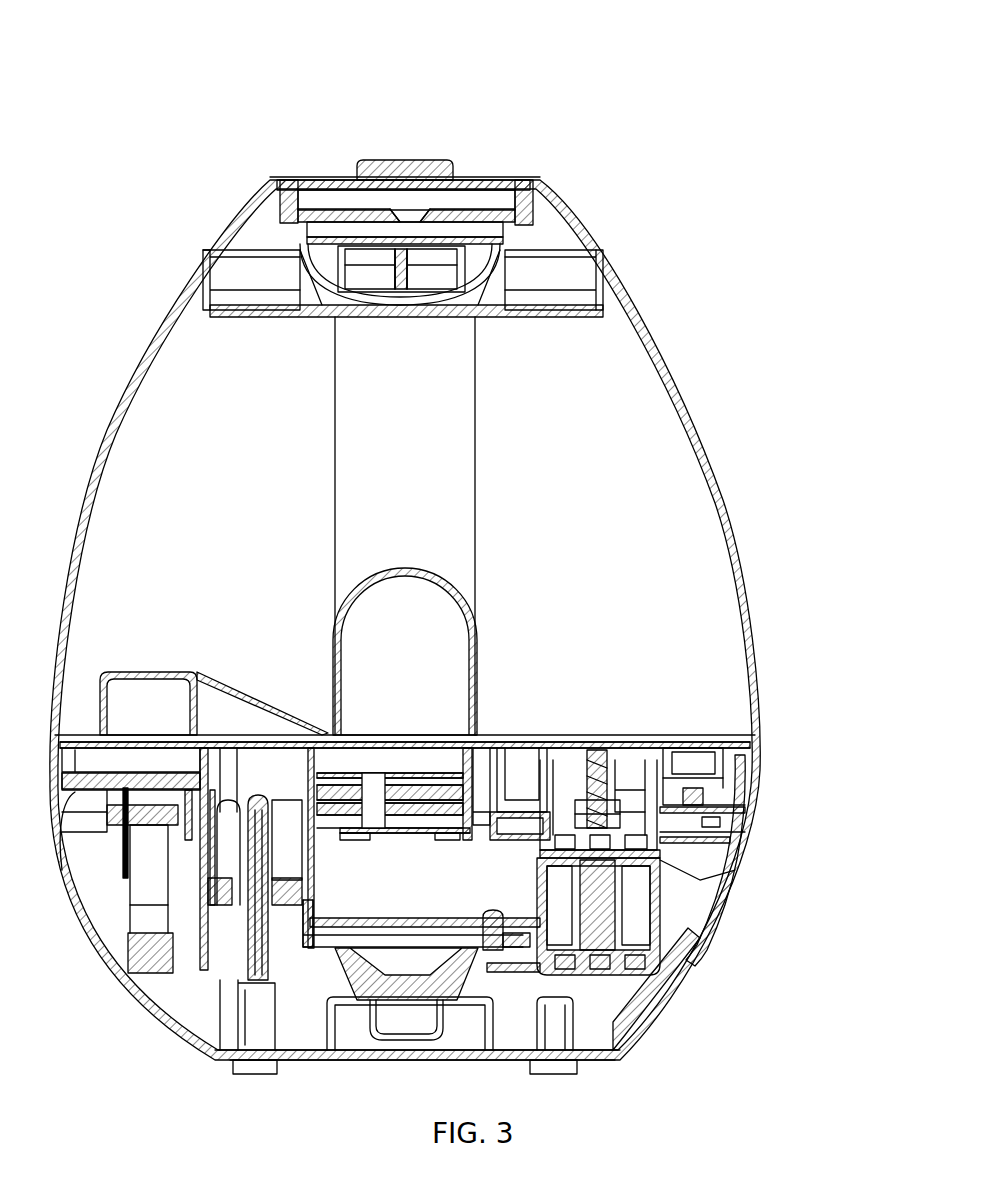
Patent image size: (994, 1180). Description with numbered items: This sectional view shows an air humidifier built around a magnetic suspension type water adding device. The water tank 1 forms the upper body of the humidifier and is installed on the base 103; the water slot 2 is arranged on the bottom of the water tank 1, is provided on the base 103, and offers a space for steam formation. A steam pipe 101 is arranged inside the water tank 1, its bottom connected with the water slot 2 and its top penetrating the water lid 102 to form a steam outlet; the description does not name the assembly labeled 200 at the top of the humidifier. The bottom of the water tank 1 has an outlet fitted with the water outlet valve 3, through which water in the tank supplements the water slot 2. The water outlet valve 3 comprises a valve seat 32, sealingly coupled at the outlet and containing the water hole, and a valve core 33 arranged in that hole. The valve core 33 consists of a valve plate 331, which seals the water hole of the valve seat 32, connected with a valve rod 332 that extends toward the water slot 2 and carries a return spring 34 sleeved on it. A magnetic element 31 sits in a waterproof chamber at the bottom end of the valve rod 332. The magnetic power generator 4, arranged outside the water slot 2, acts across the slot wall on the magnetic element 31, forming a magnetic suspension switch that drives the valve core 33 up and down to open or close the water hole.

The water tank 1 is at (714, 573).
The steam pipe 101 is at (458, 478).
The water lid 102 is at (573, 282).
The base 103 is at (118, 985).
The top cover assembly 200 is at (306, 138).
The water slot 2 is at (670, 877).
The water outlet valve 3 is at (679, 836).
The magnetic element 31 is at (673, 950).
The valve seat 32 is at (712, 804).
The valve core 33 is at (712, 740).
The valve plate 331 is at (740, 720).
The valve rod 332 is at (660, 735).
The return spring 34 is at (660, 815).
The magnetic power generator 4 is at (657, 987).